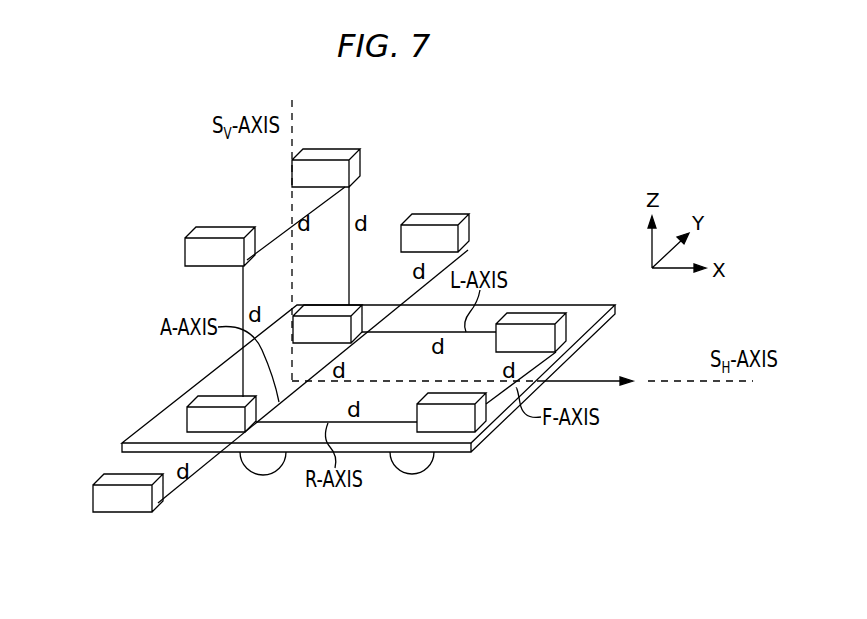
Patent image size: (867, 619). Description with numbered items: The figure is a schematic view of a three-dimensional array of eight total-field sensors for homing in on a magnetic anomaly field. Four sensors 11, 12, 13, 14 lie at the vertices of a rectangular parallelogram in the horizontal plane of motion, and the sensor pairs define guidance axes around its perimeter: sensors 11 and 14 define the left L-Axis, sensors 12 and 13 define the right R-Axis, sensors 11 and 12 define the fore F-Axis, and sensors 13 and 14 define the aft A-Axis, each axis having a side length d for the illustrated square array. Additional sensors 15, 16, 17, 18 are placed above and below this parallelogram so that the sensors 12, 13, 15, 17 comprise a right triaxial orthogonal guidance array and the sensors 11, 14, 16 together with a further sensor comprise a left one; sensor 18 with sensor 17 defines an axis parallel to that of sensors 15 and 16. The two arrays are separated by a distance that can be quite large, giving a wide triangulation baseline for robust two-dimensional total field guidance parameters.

The total field sensor 11 is at (561, 334).
The total field sensor 12 is at (485, 410).
The total field sensor 13 is at (192, 404).
The total field sensor 14 is at (316, 305).
The total field sensor 15 is at (216, 227).
The total field sensor 16 is at (327, 149).
The total field sensor 17 is at (102, 477).
The total field sensor 18 is at (436, 214).